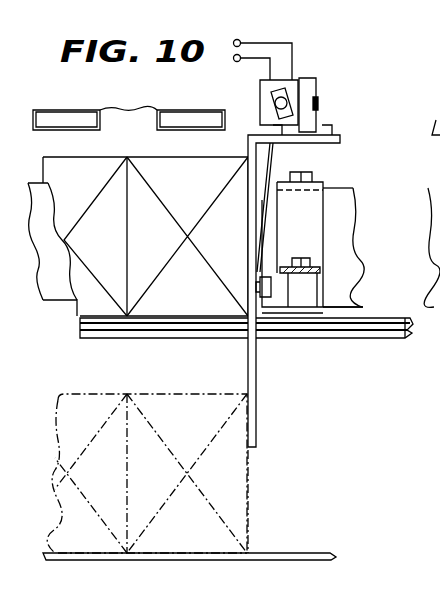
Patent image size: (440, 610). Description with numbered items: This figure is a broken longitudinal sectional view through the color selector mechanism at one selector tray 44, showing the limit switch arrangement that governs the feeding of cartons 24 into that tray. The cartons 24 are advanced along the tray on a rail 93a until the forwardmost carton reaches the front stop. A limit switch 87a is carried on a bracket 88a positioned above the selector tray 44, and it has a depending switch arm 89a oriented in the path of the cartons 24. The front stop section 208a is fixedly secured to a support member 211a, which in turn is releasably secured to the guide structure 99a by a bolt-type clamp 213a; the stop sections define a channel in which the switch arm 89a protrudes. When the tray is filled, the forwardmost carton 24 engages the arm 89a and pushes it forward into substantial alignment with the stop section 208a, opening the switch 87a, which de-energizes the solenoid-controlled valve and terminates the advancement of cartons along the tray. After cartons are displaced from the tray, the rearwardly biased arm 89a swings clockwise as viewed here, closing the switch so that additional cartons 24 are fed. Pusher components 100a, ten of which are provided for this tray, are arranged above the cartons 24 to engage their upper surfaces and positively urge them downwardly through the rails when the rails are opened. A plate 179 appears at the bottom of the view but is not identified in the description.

The pusher component 100a is at (67, 125).
The carton 24 is at (112, 157).
The limit switch 87a is at (300, 90).
The bracket 88a is at (322, 113).
The depending arm 89a is at (283, 165).
The bolt-type clamp 213a is at (320, 210).
The guide structure 99a is at (55, 300).
The support member 211a is at (258, 267).
The rail 93a is at (178, 333).
The front stop section 208a is at (257, 356).
The selector tray 44 is at (353, 341).
The base plate 179 is at (304, 552).